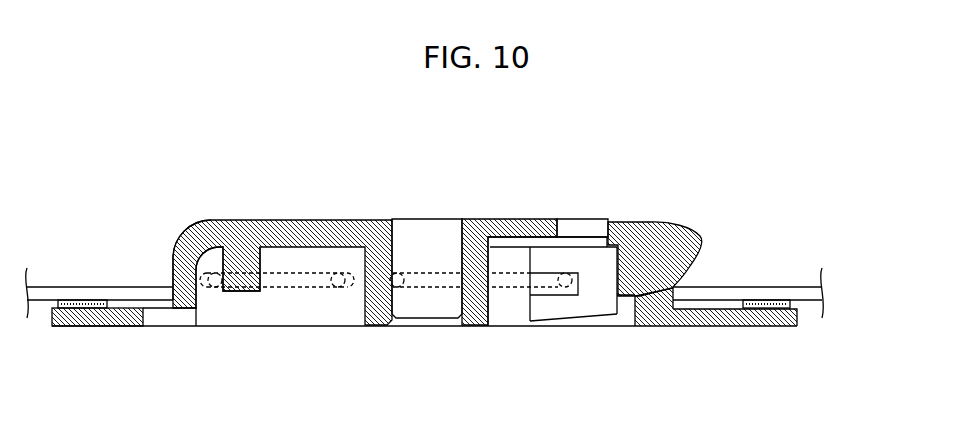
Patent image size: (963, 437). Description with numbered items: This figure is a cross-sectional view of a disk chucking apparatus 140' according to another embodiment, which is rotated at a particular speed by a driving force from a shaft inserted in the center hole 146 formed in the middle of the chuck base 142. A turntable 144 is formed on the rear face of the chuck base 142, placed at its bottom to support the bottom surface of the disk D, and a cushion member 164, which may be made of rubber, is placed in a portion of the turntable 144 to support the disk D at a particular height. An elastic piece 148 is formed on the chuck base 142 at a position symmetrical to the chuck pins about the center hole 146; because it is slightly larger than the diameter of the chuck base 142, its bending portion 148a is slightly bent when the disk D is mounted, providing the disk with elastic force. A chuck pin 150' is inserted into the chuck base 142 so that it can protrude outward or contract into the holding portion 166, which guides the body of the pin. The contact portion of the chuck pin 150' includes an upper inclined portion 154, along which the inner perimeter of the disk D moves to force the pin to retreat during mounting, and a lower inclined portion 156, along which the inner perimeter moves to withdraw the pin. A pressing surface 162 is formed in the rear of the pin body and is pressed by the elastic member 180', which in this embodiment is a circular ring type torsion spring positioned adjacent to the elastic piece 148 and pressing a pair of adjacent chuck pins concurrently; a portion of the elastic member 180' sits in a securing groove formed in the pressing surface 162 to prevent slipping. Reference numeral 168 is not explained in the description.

The disk chucking apparatus 140' is at (470, 233).
The chuck base 142 is at (270, 219).
The turntable 144 is at (122, 327).
The center hole 146 is at (397, 221).
The elastic piece 148 is at (203, 230).
The bending portion 148a is at (178, 243).
The chuck pin 150' is at (662, 248).
The upper inclined portion 154 is at (690, 237).
The lower inclined portion 156 is at (690, 262).
The pressing surface 162 is at (598, 303).
The cushion member 164 is at (80, 300).
The holding portion 166 is at (571, 243).
The socket notch 168 is at (558, 292).
The elastic member 180' is at (386, 275).
The disk D is at (56, 287).